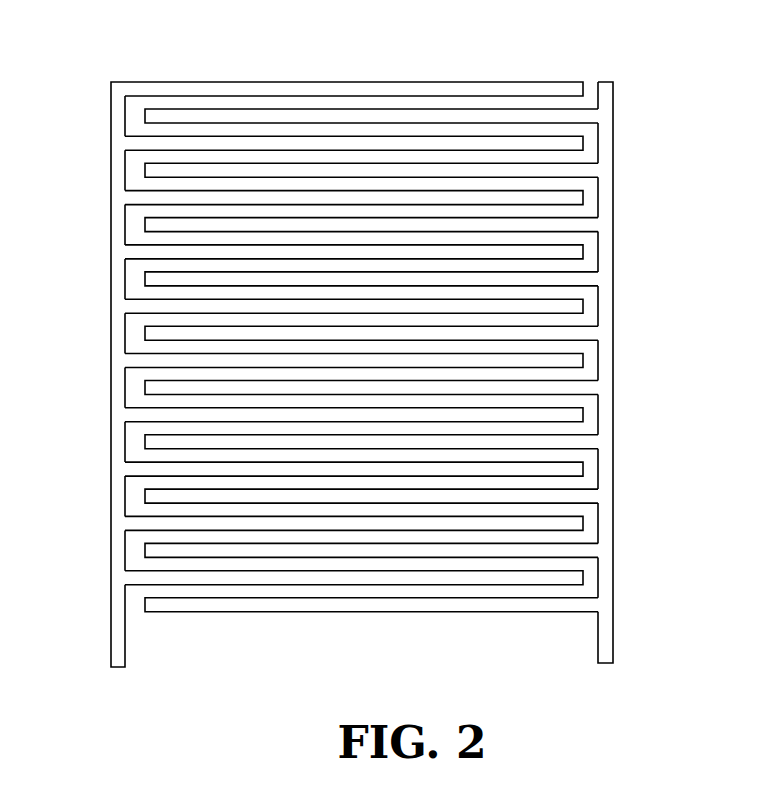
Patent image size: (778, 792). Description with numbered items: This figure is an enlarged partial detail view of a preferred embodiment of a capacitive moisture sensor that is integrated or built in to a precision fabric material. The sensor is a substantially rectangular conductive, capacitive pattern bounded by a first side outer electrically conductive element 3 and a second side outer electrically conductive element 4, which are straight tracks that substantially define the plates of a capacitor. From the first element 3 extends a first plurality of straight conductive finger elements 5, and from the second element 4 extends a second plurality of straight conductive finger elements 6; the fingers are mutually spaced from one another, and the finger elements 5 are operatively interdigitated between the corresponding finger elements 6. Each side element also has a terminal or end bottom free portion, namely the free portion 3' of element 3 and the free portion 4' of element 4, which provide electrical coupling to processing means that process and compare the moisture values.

The first side outer electrically conductive element 3 is at (85, 333).
The terminal or end bottom free portion 3' is at (168, 639).
The second side outer electrically conductive element 4 is at (645, 347).
The terminal or end bottom free portion 4' is at (653, 653).
The first plurality of conductive finger elements 5 is at (291, 92).
The second plurality of conductive finger elements 6 is at (513, 115).